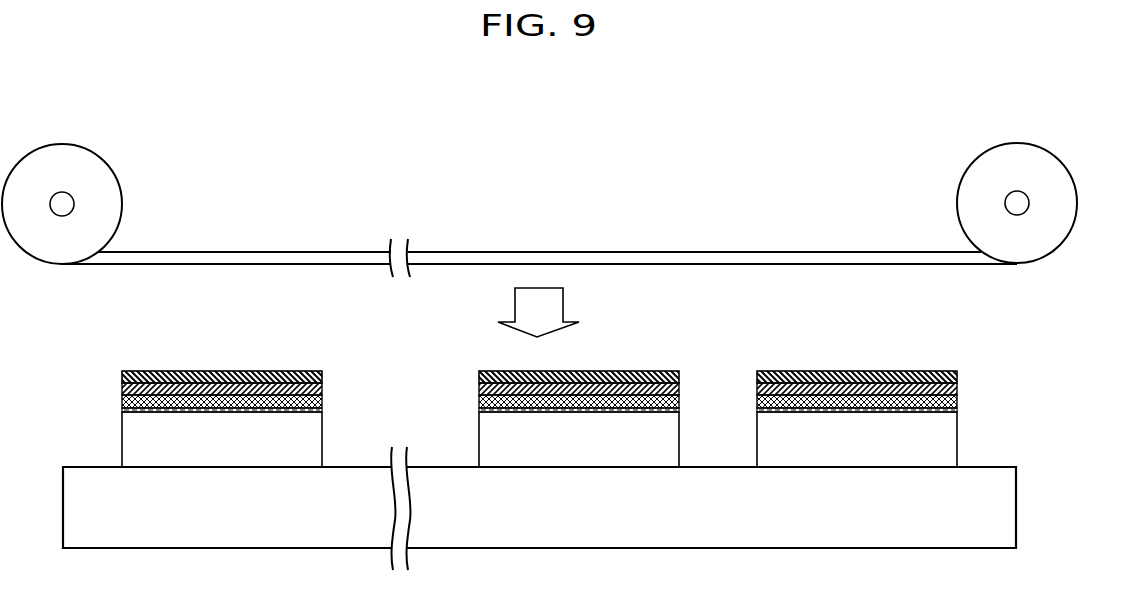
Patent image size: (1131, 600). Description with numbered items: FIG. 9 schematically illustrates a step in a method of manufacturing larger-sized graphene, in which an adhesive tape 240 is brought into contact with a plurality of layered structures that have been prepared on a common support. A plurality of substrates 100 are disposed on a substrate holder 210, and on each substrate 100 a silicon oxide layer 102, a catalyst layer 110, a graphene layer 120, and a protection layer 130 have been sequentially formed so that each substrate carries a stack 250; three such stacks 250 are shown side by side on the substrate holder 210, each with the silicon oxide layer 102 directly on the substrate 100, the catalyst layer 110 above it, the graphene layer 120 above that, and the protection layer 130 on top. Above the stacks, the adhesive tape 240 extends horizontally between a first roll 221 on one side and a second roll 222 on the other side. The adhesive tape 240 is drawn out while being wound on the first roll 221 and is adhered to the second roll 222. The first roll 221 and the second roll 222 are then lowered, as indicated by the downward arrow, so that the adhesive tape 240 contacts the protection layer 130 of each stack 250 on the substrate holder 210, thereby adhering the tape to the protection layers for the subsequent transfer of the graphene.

The substrate 100 is at (953, 440).
The silicon oxide layer 102 is at (957, 409).
The catalyst layer 110 is at (957, 401).
The graphene layer 120 is at (957, 388).
The protection layer 130 is at (957, 375).
The substrate holder 210 is at (1010, 507).
The first roll 221 is at (112, 178).
The second roll 222 is at (967, 178).
The adhesive tape 240 is at (661, 252).
The stack 250 is at (163, 362).